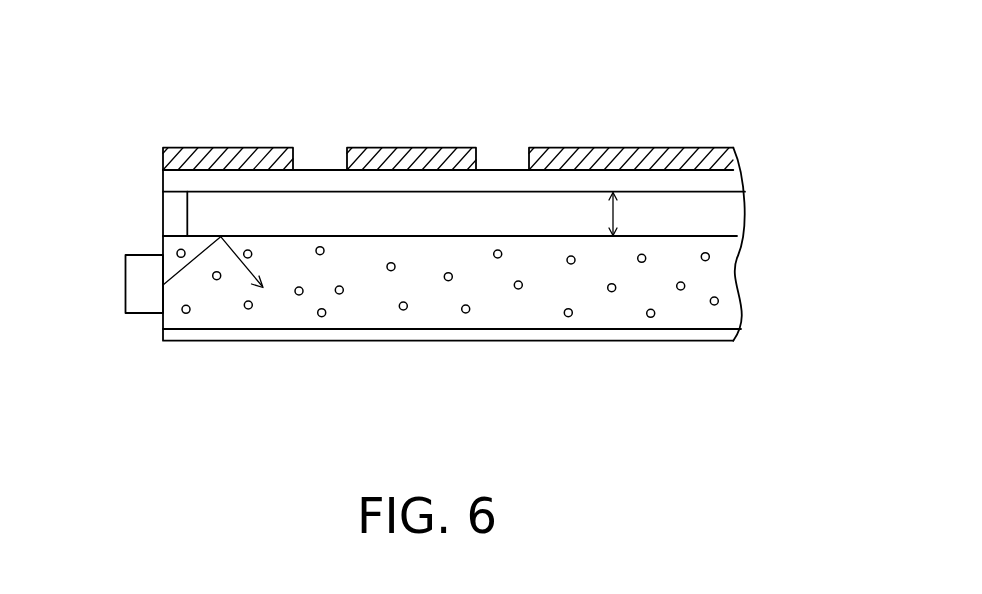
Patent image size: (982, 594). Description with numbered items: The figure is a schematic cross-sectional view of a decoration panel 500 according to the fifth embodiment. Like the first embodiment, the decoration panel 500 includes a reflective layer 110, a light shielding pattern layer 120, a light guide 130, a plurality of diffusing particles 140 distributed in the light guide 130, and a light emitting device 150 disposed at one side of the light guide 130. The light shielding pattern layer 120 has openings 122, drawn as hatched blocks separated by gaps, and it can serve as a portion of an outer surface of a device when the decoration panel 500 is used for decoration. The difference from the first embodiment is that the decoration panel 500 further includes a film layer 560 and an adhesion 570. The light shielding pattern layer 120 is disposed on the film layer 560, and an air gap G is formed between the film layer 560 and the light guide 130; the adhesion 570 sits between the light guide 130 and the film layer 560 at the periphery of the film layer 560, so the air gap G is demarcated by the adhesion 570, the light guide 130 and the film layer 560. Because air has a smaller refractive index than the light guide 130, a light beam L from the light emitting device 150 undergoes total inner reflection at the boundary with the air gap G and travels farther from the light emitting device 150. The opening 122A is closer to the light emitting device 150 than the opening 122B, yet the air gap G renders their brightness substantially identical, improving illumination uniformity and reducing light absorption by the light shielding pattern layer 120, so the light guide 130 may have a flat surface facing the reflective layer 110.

The decoration panel 500 is at (787, 414).
The reflective layer 110 is at (312, 333).
The light shielding pattern layer 120 is at (448, 86).
The openings 122 is at (333, 86).
The opening 122A is at (297, 158).
The opening 122B is at (486, 162).
The light guide 130 is at (430, 303).
The diffusing particles 140 is at (518, 289).
The light emitting device 150 is at (145, 283).
The film layer 560 is at (223, 182).
The adhesion 570 is at (172, 217).
The air gap G is at (617, 213).
The light beam L is at (187, 266).